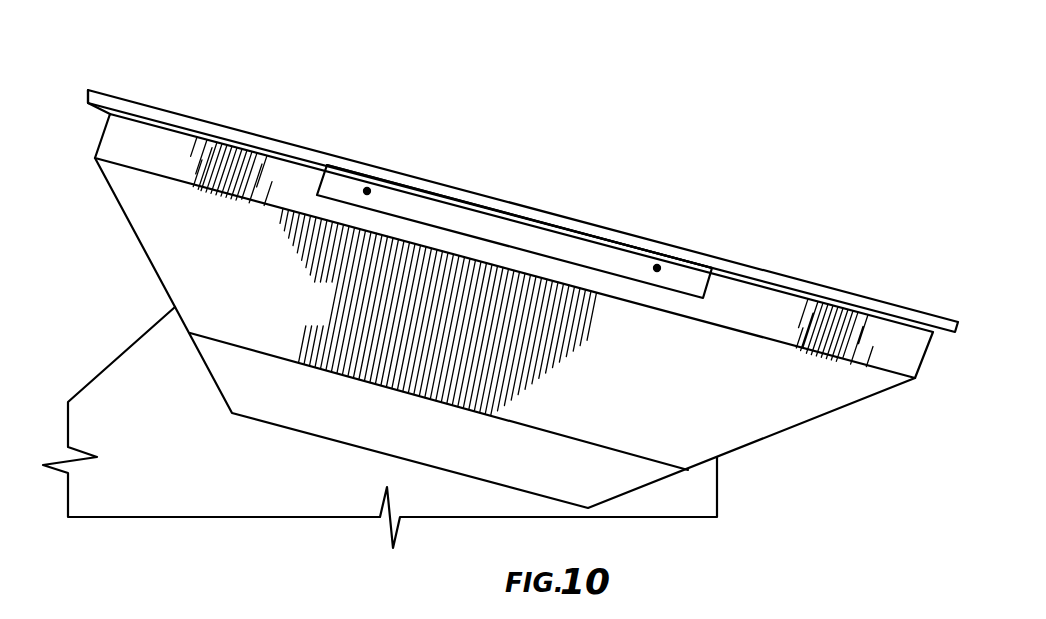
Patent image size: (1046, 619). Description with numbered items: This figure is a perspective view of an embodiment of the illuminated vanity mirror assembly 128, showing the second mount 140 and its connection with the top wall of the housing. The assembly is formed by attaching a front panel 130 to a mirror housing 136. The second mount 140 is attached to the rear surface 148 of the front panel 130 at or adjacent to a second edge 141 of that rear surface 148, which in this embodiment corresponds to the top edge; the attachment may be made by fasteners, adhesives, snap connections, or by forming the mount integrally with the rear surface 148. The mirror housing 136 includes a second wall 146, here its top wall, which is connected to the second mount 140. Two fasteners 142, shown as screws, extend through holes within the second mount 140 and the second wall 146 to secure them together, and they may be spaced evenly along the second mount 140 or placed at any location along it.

The illuminated vanity mirror assembly 128 is at (785, 177).
The front panel 130 is at (236, 129).
The mirror housing 136 is at (822, 417).
The second mount 140 is at (467, 218).
The second edge 141 is at (300, 152).
The fasteners 142 is at (367, 188).
The second wall 146 is at (762, 302).
The rear surface 148 is at (103, 110).